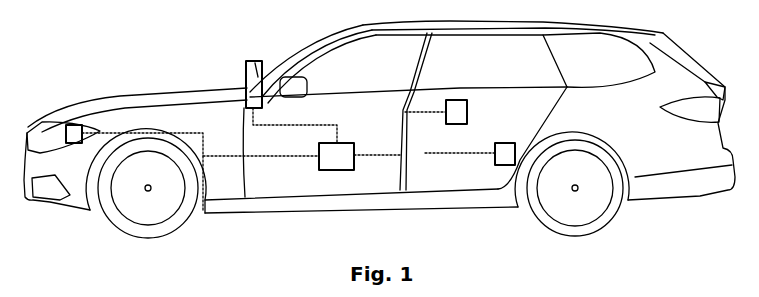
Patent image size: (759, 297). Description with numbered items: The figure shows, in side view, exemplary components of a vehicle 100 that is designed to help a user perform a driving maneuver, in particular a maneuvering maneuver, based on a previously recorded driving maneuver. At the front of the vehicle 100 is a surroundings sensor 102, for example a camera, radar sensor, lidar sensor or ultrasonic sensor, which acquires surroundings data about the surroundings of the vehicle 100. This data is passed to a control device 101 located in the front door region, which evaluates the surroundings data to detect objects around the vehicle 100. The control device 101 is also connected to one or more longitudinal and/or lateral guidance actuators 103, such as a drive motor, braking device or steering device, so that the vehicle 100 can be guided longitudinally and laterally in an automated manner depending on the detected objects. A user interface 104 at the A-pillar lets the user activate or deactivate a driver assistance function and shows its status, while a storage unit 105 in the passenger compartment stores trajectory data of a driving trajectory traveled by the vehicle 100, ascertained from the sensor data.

The vehicle 100 is at (134, 54).
The control device 101 is at (319, 158).
The surroundings sensor 102 is at (72, 125).
The longitudinal and/or lateral guidance actuator 103 is at (503, 143).
The user interface 104 is at (247, 61).
The storage unit 105 is at (452, 100).